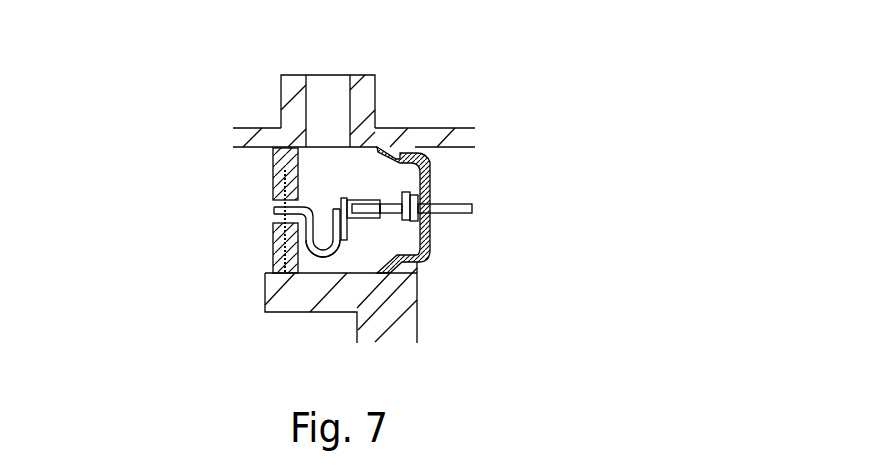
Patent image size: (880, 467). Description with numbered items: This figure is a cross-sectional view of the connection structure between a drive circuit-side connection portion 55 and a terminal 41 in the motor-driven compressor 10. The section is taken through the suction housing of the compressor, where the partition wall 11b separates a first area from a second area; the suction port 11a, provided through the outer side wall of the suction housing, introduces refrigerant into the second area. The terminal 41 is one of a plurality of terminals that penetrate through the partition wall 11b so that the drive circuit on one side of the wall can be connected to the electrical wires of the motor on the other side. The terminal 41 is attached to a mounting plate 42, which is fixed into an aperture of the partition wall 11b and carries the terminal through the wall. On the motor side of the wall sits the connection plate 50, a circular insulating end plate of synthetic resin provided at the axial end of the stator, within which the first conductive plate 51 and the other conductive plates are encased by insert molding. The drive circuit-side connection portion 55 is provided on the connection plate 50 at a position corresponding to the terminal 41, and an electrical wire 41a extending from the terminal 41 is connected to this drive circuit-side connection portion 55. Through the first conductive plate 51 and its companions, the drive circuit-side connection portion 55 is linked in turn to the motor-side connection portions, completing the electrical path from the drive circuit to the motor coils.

The motor-driven compressor 10 is at (427, 127).
The suction port 11a is at (327, 102).
The partition wall 11b is at (407, 325).
The terminal 41 is at (451, 214).
The electrical wire 41a is at (322, 258).
The mounting plate 42 is at (433, 180).
The connection plate 50 is at (275, 250).
The first conductive plate 51 is at (278, 182).
The drive circuit-side connection portion 55 is at (297, 197).